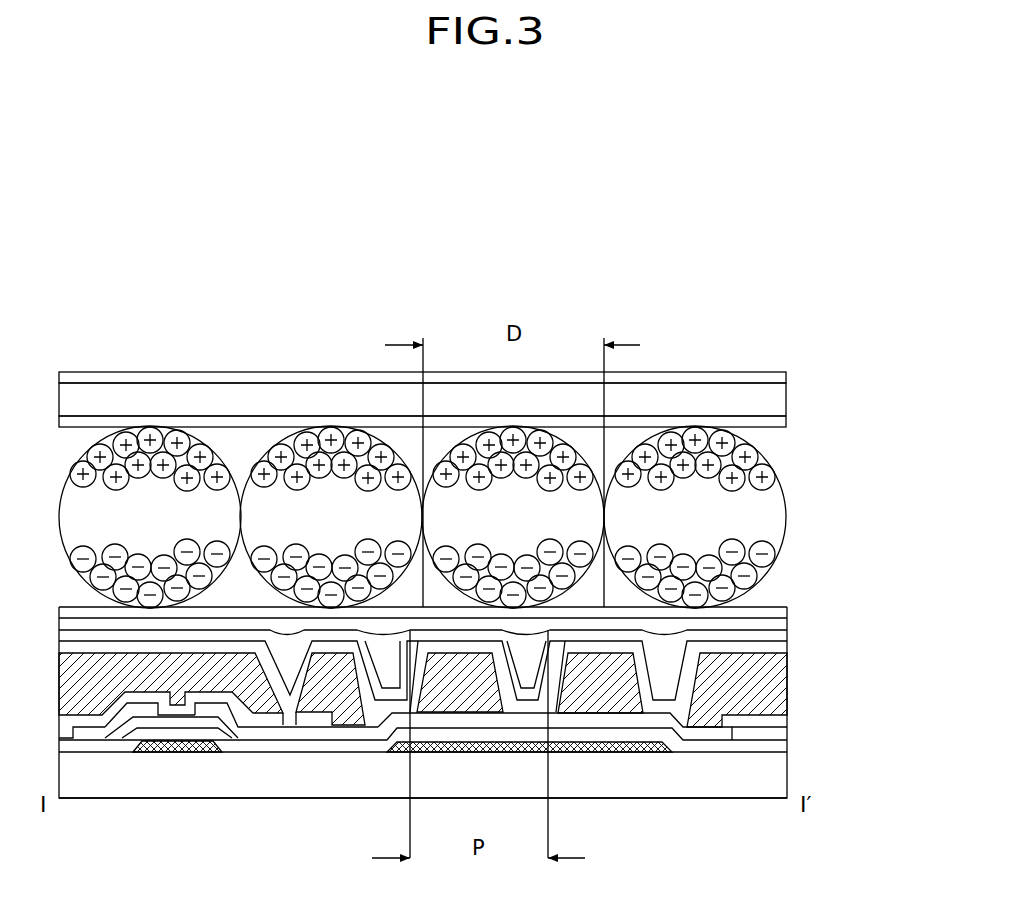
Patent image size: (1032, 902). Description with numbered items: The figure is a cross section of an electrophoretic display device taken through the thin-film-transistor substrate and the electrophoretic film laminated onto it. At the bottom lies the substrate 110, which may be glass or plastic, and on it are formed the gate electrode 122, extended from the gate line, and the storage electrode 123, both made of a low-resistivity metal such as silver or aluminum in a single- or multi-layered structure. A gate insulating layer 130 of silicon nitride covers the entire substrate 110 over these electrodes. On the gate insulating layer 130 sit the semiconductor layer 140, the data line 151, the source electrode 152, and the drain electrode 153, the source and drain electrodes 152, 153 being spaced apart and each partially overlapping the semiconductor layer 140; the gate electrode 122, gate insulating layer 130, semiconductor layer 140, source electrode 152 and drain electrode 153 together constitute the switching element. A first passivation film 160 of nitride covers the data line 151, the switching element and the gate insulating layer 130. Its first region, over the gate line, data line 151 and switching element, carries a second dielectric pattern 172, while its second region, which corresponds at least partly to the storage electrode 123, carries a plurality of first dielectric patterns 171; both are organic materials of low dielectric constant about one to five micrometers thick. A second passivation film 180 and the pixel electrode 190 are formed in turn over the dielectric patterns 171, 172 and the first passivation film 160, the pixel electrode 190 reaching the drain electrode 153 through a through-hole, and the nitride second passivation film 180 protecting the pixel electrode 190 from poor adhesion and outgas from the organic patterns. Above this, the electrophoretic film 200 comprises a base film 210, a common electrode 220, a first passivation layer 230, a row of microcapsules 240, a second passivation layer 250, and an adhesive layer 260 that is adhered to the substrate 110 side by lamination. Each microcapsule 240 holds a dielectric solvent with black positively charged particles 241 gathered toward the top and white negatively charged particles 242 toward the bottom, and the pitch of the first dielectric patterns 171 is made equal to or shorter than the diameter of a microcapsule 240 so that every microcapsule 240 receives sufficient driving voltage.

The substrate 110 is at (787, 772).
The gate electrode 122 is at (186, 746).
The storage electrode 123 is at (527, 748).
The gate insulating layer 130 is at (787, 748).
The semiconductor layer 140 is at (150, 730).
The data line 151 is at (88, 736).
The source electrode 152 is at (120, 712).
The drain electrode 153 is at (291, 734).
The first passivation film 160 is at (787, 716).
The first dielectric patterns 171 is at (463, 708).
The second dielectric pattern 172 is at (253, 700).
The second passivation film 180 is at (463, 738).
The pixel electrode 190 is at (787, 641).
The electrophoretic film 200 is at (870, 375).
The base film 210 is at (787, 380).
The common electrode 220 is at (787, 400).
The first passivation layer 230 is at (787, 419).
The microcapsules 240 is at (787, 518).
The positively charged particles 241 is at (775, 477).
The negatively charged particles 242 is at (775, 556).
The second passivation layer 250 is at (787, 607).
The adhesive layer 260 is at (787, 624).